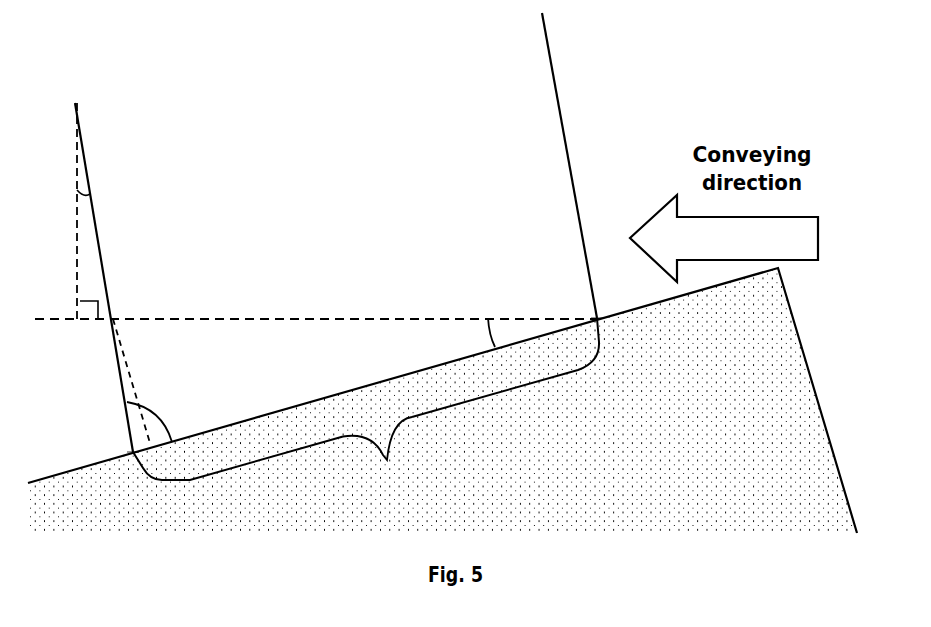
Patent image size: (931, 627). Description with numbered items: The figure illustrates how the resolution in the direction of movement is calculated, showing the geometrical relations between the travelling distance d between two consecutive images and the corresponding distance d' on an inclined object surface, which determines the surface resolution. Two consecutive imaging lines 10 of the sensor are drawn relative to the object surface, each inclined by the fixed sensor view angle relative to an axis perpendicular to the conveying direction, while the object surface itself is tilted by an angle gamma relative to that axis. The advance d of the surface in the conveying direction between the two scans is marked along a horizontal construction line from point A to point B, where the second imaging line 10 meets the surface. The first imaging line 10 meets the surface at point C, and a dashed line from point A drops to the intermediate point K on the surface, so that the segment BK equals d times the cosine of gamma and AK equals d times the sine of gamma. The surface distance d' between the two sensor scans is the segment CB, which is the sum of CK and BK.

The imaging line 10 is at (87, 148).
The point A is at (107, 308).
The point B is at (603, 335).
The point C is at (129, 469).
The point K is at (143, 397).
The travelling distance d is at (317, 304).
The distance between two sensor scans on the surface d' is at (377, 457).